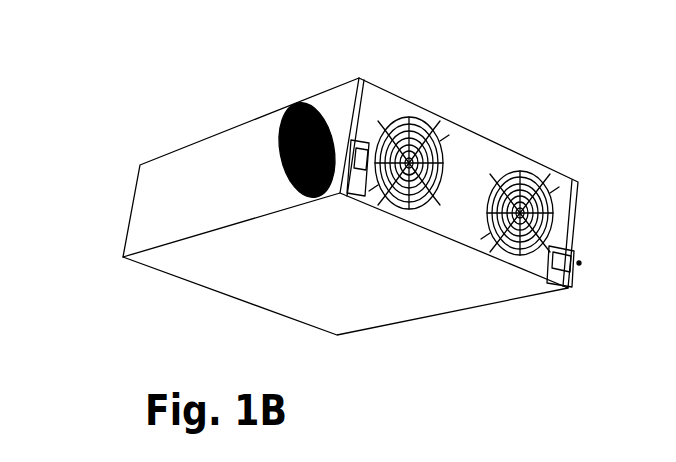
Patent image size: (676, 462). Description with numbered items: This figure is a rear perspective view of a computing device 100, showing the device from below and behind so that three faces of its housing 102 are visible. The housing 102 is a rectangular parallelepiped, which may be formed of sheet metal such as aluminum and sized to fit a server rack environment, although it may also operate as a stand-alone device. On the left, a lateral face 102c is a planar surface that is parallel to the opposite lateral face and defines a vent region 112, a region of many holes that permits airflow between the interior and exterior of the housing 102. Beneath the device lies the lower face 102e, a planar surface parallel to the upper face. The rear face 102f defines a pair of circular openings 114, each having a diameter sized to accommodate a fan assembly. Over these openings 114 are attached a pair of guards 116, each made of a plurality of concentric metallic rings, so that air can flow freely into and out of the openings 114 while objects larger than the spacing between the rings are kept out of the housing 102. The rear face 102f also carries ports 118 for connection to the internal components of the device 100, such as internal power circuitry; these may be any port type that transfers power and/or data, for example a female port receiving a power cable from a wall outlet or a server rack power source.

The computing device 100 is at (340, 199).
The housing 102 is at (340, 199).
The lateral face 102c is at (192, 151).
The lower face 102e is at (468, 311).
The rear face 102f is at (478, 154).
The vent region 112 is at (306, 109).
The openings 114 is at (416, 114).
The guards 116 is at (454, 188).
The ports 118 is at (581, 264).